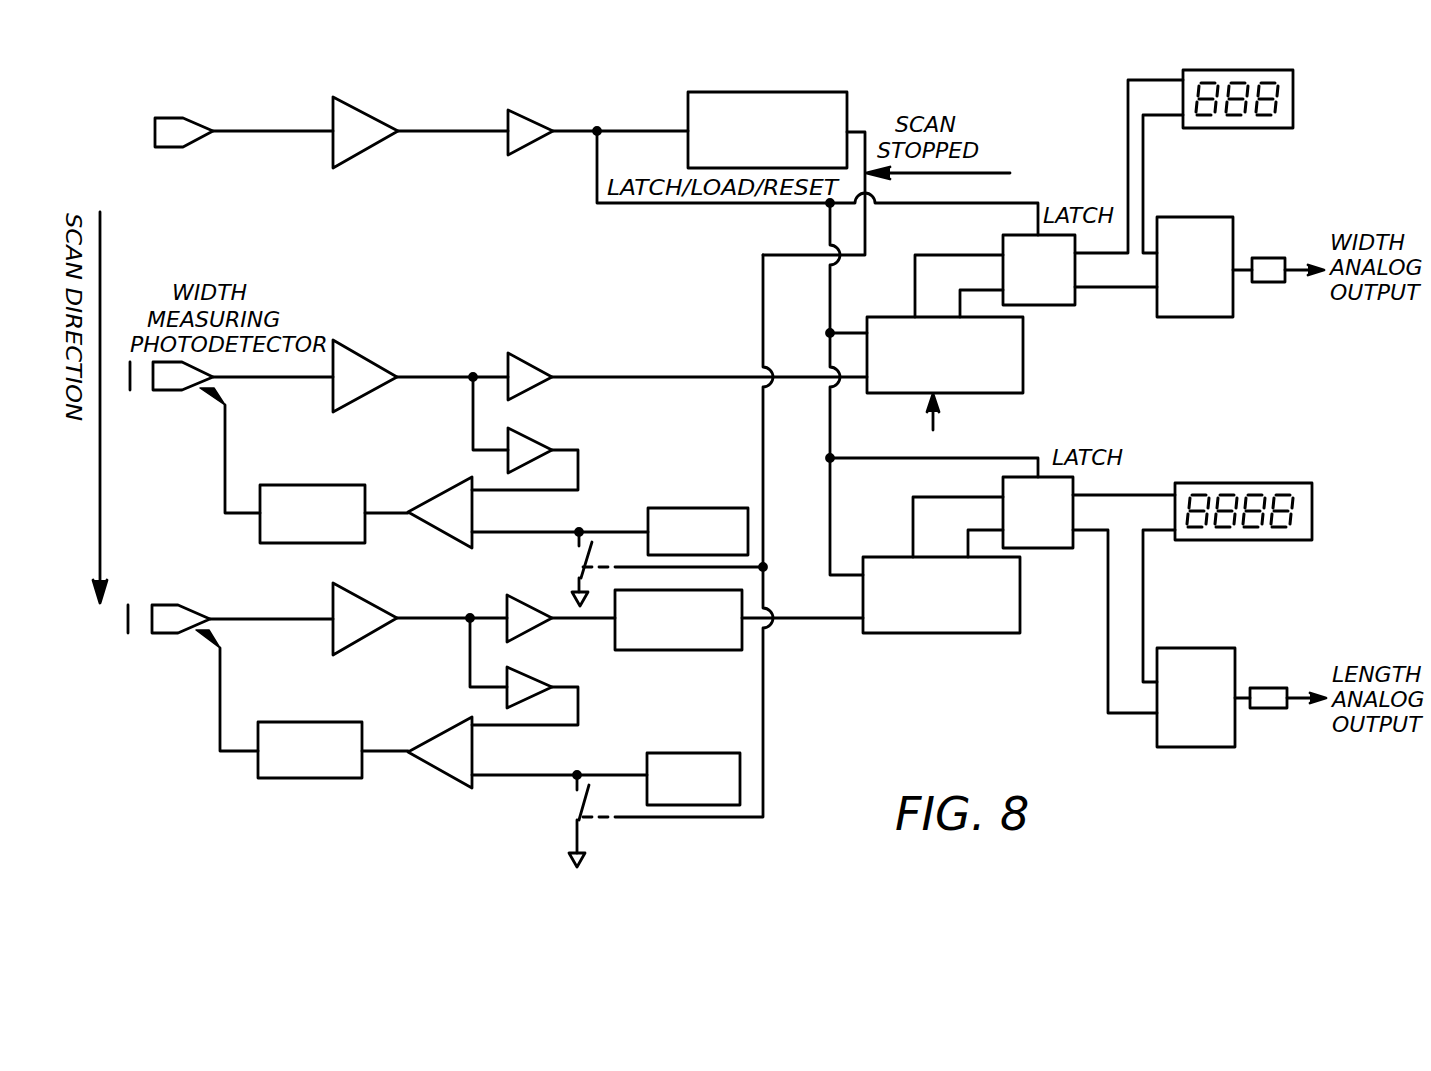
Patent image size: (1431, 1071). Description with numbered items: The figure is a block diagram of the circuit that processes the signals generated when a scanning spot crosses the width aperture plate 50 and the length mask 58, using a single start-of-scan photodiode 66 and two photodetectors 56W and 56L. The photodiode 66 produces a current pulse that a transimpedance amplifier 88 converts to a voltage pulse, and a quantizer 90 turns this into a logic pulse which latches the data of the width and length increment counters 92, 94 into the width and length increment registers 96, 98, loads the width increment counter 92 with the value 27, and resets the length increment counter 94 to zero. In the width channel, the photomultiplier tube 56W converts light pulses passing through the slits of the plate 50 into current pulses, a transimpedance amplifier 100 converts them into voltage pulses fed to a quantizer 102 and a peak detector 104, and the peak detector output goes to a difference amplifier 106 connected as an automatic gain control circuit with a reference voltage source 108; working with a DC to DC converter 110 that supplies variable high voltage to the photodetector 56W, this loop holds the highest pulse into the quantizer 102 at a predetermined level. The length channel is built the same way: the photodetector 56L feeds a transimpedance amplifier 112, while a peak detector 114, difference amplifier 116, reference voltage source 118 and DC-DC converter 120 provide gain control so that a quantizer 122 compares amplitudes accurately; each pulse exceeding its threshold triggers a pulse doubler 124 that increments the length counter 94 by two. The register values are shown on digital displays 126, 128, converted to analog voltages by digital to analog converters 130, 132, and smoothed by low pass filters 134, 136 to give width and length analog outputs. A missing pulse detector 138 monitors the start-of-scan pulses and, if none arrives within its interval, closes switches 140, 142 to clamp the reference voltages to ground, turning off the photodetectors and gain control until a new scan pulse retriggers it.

The start-of-scan photodiode 66 is at (187, 138).
The transimpedance amplifier 88 is at (372, 128).
The quantizer 90 is at (531, 128).
The missing pulse detector 138 is at (840, 91).
The digital display 126 is at (1273, 128).
The low pass filter 134 is at (1270, 258).
The digital to analog converter 130 is at (1215, 310).
The width increment register 96 is at (1063, 305).
The width increment counter 92 is at (996, 366).
The preset value 27 is at (992, 423).
The length increment register 98 is at (1050, 535).
The length increment counter 94 is at (981, 620).
The digital display 128 is at (1302, 540).
The low pass filter 136 is at (1270, 698).
The digital to analog converter 132 is at (1210, 738).
The width aperture plate 50 is at (130, 390).
The width measuring photodetector 56W is at (187, 385).
The transimpedance amplifier 100 is at (367, 370).
The quantizer 102 is at (531, 370).
The peak detector 104 is at (527, 455).
The difference amplifier 106 is at (460, 508).
The reference voltage source 108 is at (693, 510).
The DC to DC converter 110 is at (305, 500).
The switch 140 is at (584, 558).
The length mask 58 is at (128, 633).
The length measuring photodetector 56L is at (178, 625).
The transimpedance amplifier 112 is at (365, 615).
The quantizer 122 is at (522, 622).
The peak detector 114 is at (510, 688).
The difference amplifier 116 is at (460, 748).
The reference voltage source 118 is at (712, 753).
The DC-DC converter 120 is at (316, 770).
The pulse doubler 124 is at (693, 650).
The switch 142 is at (580, 800).